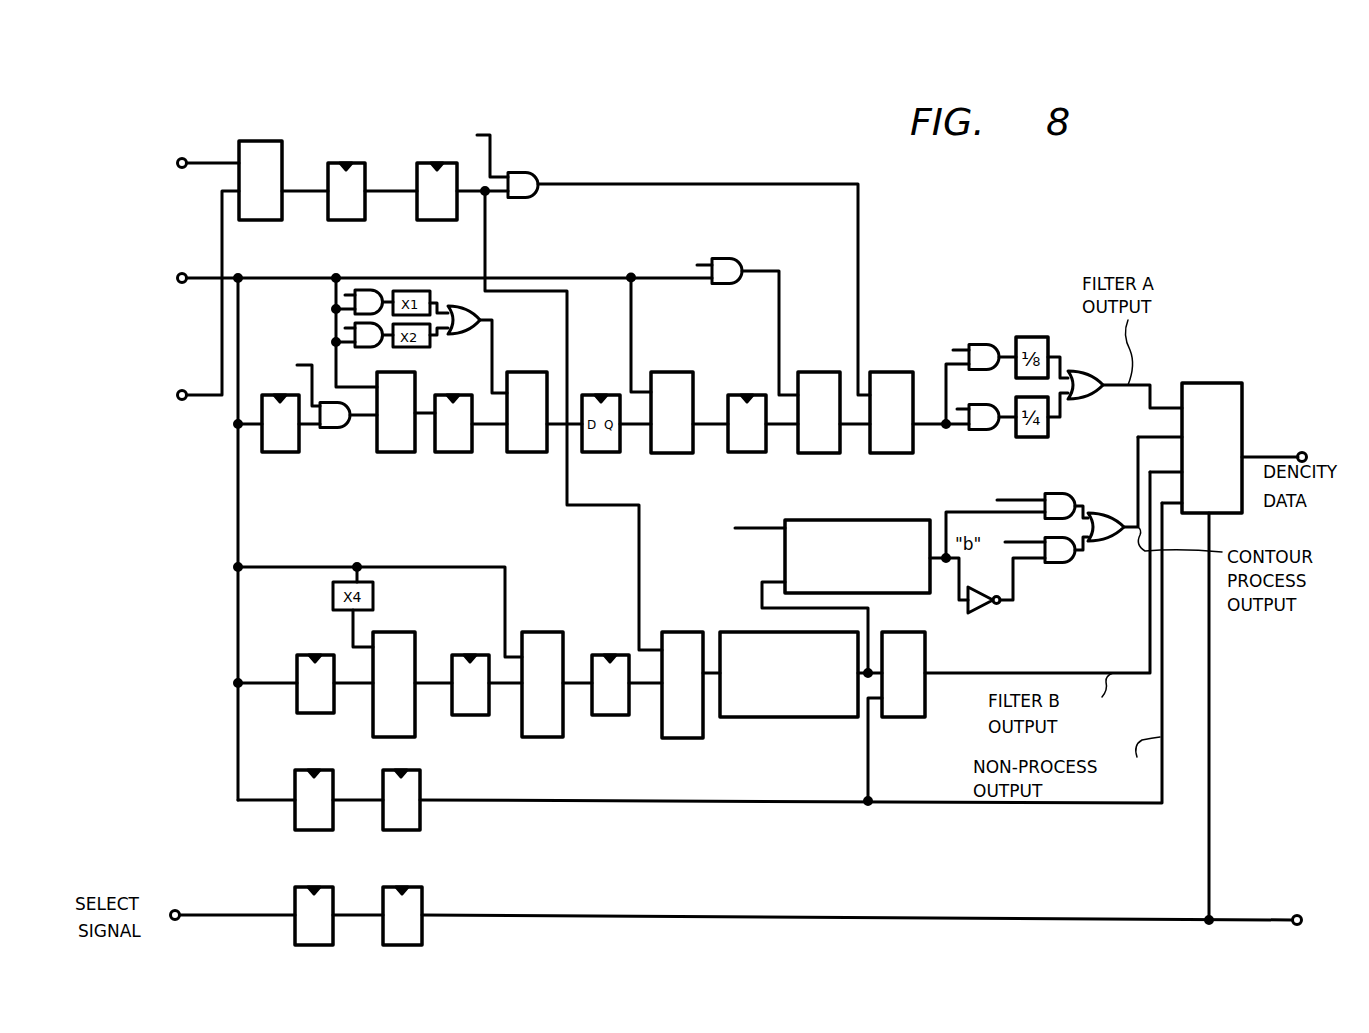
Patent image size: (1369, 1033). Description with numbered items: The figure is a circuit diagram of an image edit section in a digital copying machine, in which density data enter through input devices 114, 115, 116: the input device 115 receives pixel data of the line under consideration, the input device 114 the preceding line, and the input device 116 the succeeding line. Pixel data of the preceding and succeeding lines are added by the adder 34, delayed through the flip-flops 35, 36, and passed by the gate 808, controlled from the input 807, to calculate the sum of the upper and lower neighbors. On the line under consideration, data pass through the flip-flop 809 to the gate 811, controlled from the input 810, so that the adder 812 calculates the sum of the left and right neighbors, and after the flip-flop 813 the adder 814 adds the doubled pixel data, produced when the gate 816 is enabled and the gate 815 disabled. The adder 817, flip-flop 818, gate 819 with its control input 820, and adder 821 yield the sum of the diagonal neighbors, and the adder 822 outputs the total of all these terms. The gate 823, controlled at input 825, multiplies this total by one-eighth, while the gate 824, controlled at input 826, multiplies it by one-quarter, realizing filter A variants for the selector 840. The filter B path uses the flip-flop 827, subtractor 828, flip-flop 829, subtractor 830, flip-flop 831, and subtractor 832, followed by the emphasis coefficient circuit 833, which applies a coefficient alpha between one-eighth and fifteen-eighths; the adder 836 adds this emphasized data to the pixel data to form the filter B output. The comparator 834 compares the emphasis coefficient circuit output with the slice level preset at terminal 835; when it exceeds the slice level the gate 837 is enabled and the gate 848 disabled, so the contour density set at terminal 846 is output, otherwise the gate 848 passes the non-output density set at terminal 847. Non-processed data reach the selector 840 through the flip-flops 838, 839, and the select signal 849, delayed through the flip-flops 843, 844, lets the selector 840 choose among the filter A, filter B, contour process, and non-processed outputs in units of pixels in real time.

The adder 34 is at (256, 141).
The flip-flop 35 is at (344, 163).
The flip-flop 36 is at (436, 163).
The input device 114 is at (186, 158).
The input device 115 is at (196, 258).
The input device 116 is at (183, 390).
The control signal input 807 is at (489, 135).
The gate 808 is at (530, 172).
The flip-flop 809 is at (274, 452).
The control signal input 810 is at (297, 365).
The gate 811 is at (330, 428).
The adder 812 is at (390, 452).
The flip-flop 813 is at (450, 452).
The adder 814 is at (517, 452).
The gate 815 is at (368, 290).
The gate 816 is at (380, 347).
The adder 817 is at (667, 372).
The flip-flop 818 is at (743, 395).
The gate 819 is at (724, 258).
The control signal input 820 is at (703, 265).
The adder 821 is at (817, 372).
The adder 822 is at (893, 372).
The gate 823 is at (985, 344).
The gate 824 is at (981, 429).
The control signal input 825 is at (955, 348).
The control signal input 826 is at (962, 428).
The flip-flop 827 is at (317, 655).
The subtractor 828 is at (394, 632).
The flip-flop 829 is at (467, 655).
The subtractor 830 is at (540, 632).
The flip-flop 831 is at (608, 655).
The subtractor 832 is at (680, 632).
The emphasis coefficient circuit 833 is at (758, 717).
The comparator 834 is at (867, 520).
The terminal 835 is at (762, 528).
The adder 836 is at (927, 650).
The gate 837 is at (1070, 493).
The flip-flop 838 is at (315, 770).
The flip-flop 839 is at (422, 787).
The selector 840 is at (1202, 383).
The flip-flop 843 is at (320, 887).
The flip-flop 844 is at (422, 898).
The terminal 846 is at (1025, 498).
The terminal 847 is at (1033, 543).
The gate 848 is at (1057, 562).
The select signal 849 is at (180, 911).